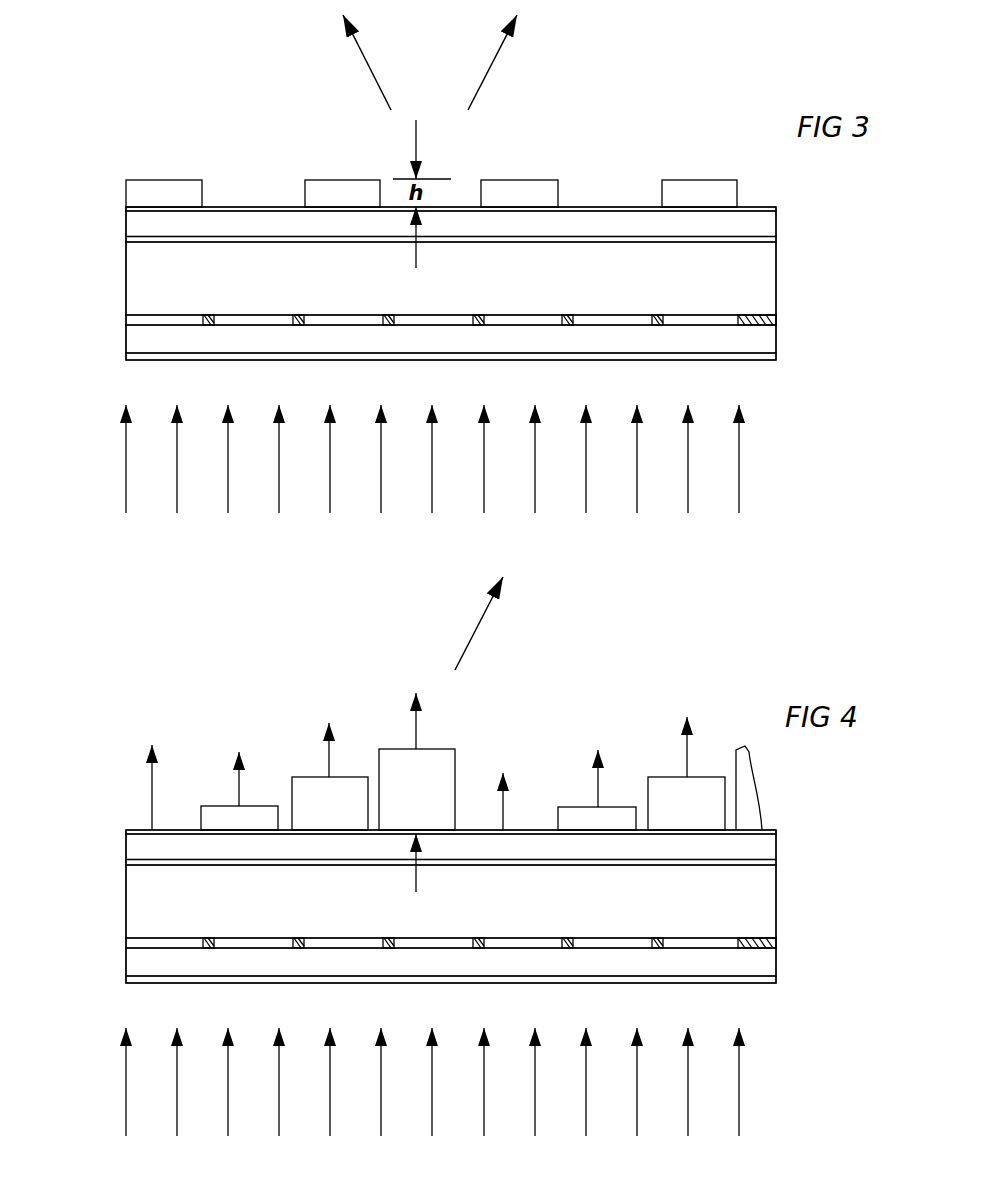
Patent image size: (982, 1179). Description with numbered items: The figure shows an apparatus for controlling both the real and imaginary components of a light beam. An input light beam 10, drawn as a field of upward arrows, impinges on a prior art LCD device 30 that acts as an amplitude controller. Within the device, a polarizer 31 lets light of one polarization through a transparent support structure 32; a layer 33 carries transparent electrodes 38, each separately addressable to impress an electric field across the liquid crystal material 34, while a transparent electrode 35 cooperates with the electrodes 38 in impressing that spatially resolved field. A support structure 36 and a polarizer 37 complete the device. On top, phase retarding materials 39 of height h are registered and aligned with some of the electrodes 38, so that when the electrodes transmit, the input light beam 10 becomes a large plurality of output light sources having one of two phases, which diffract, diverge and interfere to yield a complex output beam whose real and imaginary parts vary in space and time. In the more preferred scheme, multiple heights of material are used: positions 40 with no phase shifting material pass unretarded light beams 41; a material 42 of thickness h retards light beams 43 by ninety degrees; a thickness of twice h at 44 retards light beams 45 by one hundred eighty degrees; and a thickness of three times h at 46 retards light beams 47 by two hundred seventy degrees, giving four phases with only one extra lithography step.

In FIG. 3, the input light beam 10 is at (770, 457).
In FIG. 4, the input light beam 10 is at (770, 1080).
In FIG. 3, the LCD device 30 is at (788, 207).
In FIG. 4, the LCD device 30 is at (788, 830).
In FIG. 3, the polarizer 31 is at (125, 355).
In FIG. 4, the polarizer 31 is at (125, 978).
In FIG. 3, the transparent support structure 32 is at (125, 340).
In FIG. 4, the transparent support structure 32 is at (125, 963).
In FIG. 3, the layer 33 is at (125, 322).
In FIG. 4, the layer 33 is at (125, 945).
In FIG. 3, the liquid crystal material 34 is at (125, 284).
In FIG. 4, the liquid crystal material 34 is at (125, 907).
In FIG. 3, the transparent electrode 35 is at (125, 243).
In FIG. 4, the transparent electrode 35 is at (125, 866).
In FIG. 3, the support structure 36 is at (125, 222).
In FIG. 4, the support structure 36 is at (125, 845).
In FIG. 3, the polarizer 37 is at (126, 208).
In FIG. 4, the polarizer 37 is at (126, 831).
In FIG. 3, the transparent electrodes 38 is at (172, 315).
In FIG. 4, the transparent electrodes 38 is at (172, 938).
In FIG. 3, the phase retarding materials 39 is at (162, 182).
In FIG. 4, the positions 40 is at (125, 829).
In FIG. 4, the light beams 41 is at (155, 815).
In FIG. 4, the material 42 is at (218, 805).
In FIG. 4, the light beams 43 is at (242, 790).
In FIG. 4, the thickness 2h of material 44 is at (313, 777).
In FIG. 4, the light beams 45 is at (332, 758).
In FIG. 4, the thickness 3h of material 46 is at (393, 750).
In FIG. 4, the light beams 47 is at (418, 728).